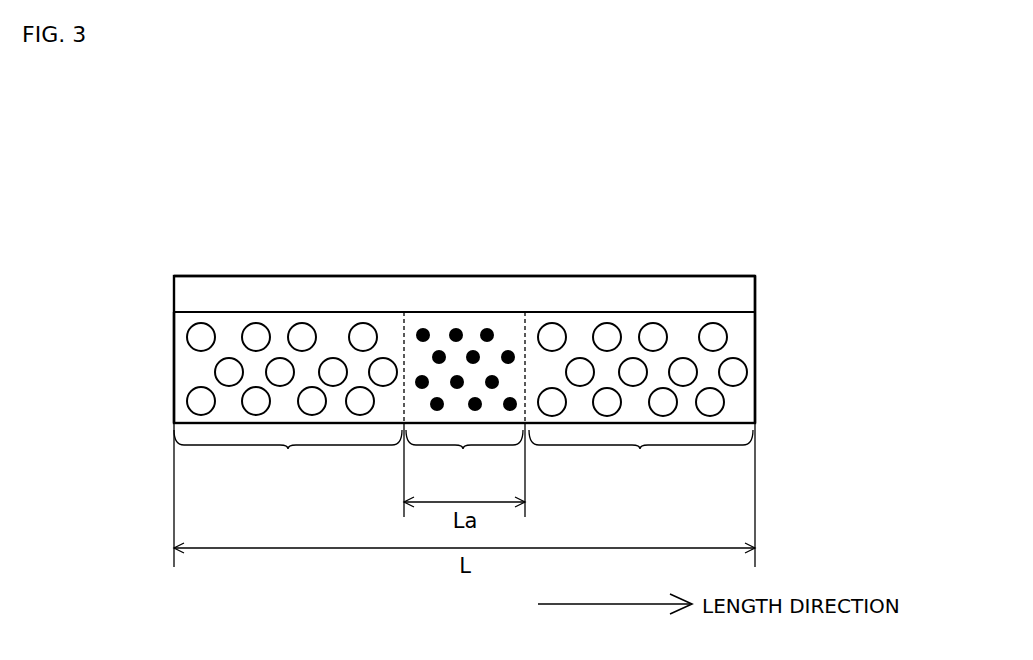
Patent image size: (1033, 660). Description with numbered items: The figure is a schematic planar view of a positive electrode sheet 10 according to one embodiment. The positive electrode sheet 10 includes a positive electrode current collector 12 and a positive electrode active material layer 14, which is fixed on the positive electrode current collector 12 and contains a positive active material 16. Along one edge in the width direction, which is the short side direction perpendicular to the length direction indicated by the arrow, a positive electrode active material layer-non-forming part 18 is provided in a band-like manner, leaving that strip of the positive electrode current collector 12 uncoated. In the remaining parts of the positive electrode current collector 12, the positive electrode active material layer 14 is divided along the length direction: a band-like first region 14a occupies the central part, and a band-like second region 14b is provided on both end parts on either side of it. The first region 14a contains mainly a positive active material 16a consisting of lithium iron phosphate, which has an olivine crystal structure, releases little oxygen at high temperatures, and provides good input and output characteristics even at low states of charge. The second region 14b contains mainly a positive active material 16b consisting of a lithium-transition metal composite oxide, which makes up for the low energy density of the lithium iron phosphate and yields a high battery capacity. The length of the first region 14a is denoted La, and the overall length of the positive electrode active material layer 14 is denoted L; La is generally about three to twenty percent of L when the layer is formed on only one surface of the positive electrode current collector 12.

The positive electrode sheet 10 is at (722, 194).
The positive electrode current collector 12 is at (757, 283).
The positive electrode active material layer-non-forming part 18 is at (746, 303).
The positive electrode active material layer 14 is at (463, 398).
The first region 14a is at (464, 398).
The second region 14b is at (463, 398).
The positive active material 16 is at (467, 317).
The positive active material consisting of lithium iron phosphate 16a is at (424, 326).
The positive active material consisting of a lithium-transition metal composite oxid 16b is at (201, 328).